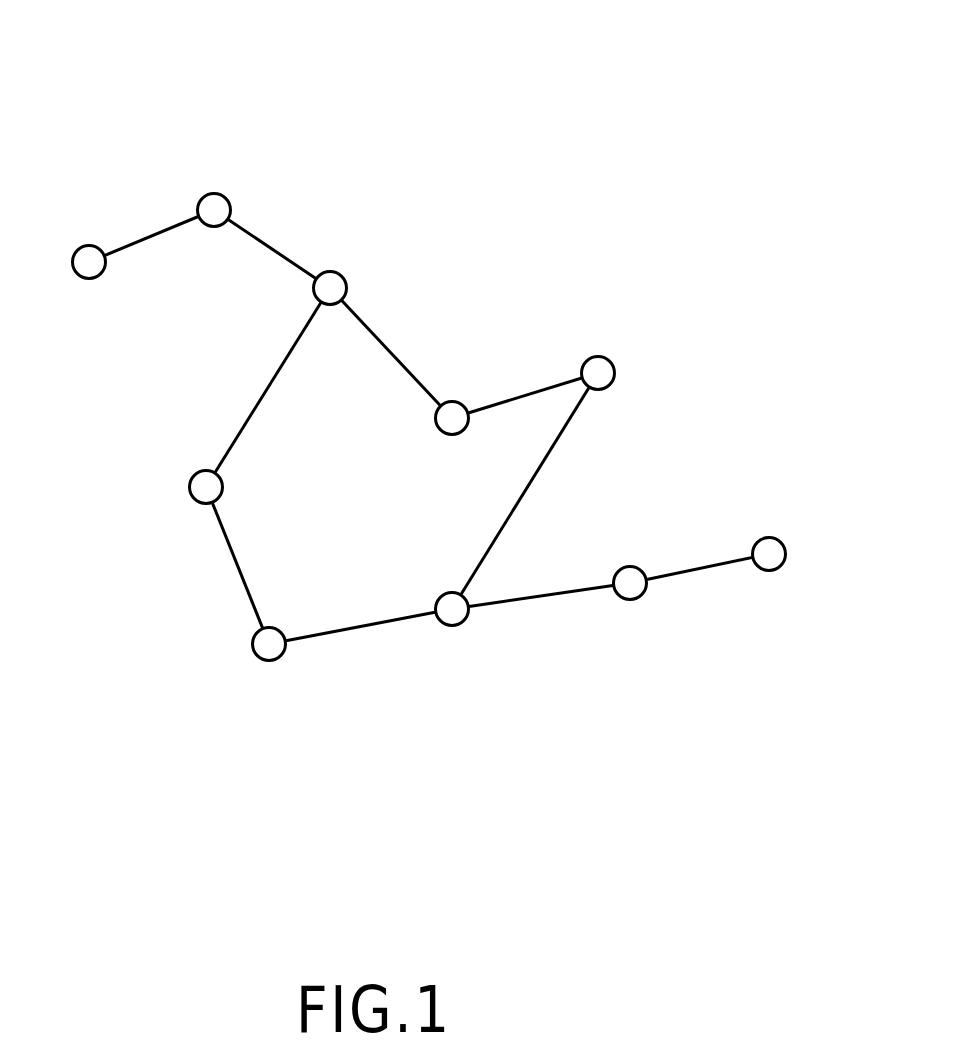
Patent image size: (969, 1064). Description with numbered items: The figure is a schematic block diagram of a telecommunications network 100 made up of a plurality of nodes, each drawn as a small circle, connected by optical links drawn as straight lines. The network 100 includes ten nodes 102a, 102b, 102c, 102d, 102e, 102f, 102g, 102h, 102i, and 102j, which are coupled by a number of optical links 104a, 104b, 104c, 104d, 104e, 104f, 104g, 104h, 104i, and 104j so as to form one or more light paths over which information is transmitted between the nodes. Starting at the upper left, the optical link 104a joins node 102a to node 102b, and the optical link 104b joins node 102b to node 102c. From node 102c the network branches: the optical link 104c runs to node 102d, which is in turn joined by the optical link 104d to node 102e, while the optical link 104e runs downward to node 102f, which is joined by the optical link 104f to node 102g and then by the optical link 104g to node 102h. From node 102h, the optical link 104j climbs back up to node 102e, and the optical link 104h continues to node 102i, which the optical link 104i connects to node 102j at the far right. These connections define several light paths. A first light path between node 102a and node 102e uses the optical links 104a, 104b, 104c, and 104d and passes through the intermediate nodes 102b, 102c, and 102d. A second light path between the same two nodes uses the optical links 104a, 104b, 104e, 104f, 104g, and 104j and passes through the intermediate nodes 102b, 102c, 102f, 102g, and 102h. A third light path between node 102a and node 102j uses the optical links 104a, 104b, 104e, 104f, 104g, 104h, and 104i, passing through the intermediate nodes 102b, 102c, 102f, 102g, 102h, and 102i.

The network 100 is at (612, 126).
The node 102a is at (61, 271).
The node 102b is at (216, 195).
The node 102c is at (356, 279).
The node 102d is at (421, 423).
The node 102e is at (628, 377).
The node 102f is at (176, 487).
The node 102g is at (242, 656).
The node 102h is at (457, 626).
The node 102i is at (632, 599).
The node 102j is at (770, 574).
The optical link 104a is at (166, 232).
The optical link 104b is at (270, 248).
The optical link 104c is at (384, 345).
The optical link 104d is at (522, 397).
The optical link 104e is at (280, 371).
The optical link 104f is at (237, 567).
The optical link 104g is at (357, 627).
The optical link 104h is at (535, 597).
The optical link 104i is at (690, 570).
The optical link 104j is at (511, 507).